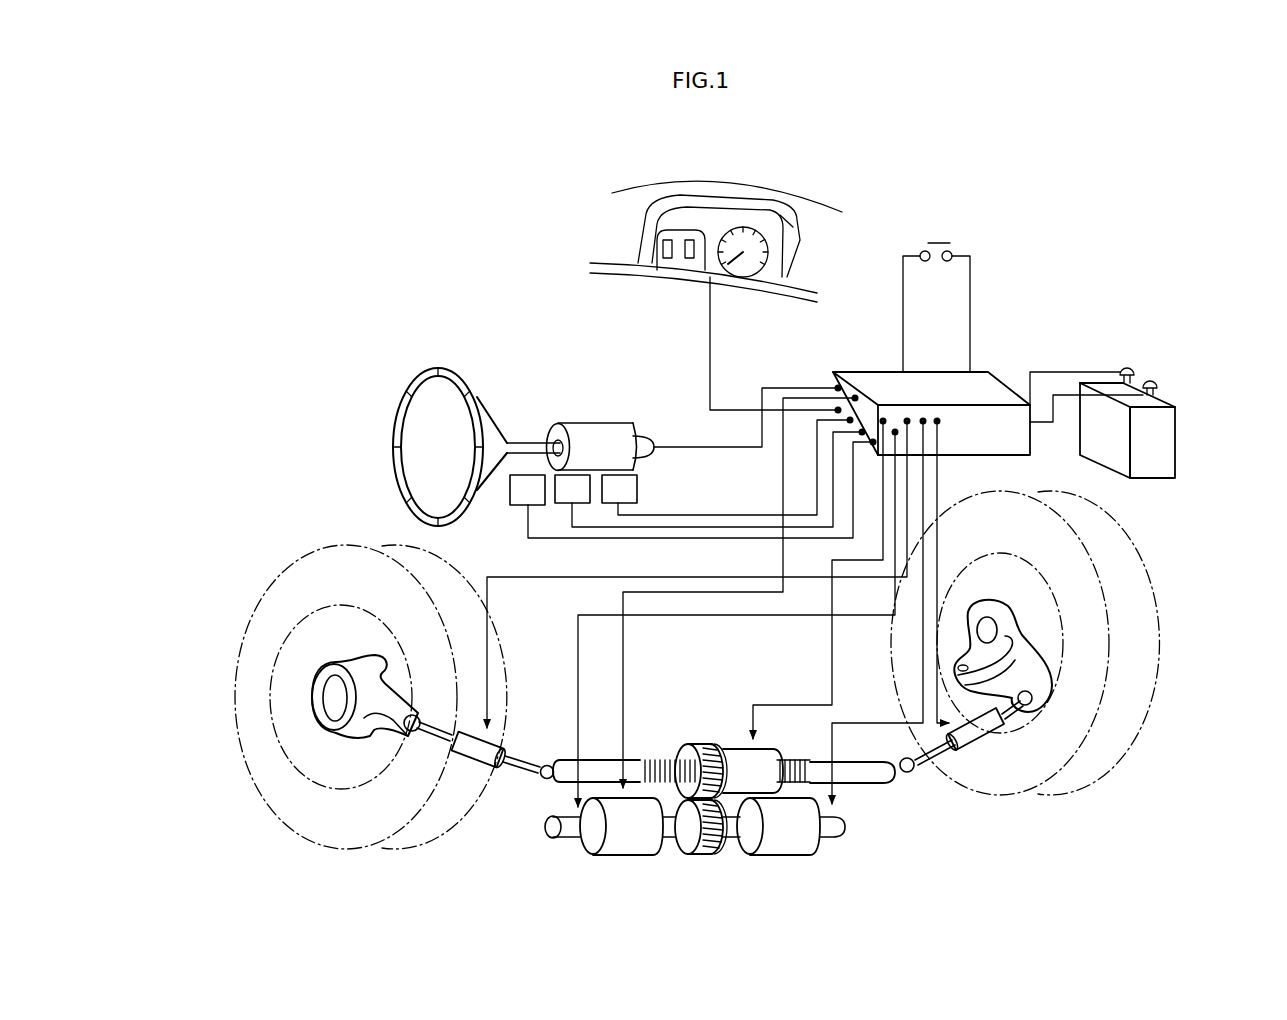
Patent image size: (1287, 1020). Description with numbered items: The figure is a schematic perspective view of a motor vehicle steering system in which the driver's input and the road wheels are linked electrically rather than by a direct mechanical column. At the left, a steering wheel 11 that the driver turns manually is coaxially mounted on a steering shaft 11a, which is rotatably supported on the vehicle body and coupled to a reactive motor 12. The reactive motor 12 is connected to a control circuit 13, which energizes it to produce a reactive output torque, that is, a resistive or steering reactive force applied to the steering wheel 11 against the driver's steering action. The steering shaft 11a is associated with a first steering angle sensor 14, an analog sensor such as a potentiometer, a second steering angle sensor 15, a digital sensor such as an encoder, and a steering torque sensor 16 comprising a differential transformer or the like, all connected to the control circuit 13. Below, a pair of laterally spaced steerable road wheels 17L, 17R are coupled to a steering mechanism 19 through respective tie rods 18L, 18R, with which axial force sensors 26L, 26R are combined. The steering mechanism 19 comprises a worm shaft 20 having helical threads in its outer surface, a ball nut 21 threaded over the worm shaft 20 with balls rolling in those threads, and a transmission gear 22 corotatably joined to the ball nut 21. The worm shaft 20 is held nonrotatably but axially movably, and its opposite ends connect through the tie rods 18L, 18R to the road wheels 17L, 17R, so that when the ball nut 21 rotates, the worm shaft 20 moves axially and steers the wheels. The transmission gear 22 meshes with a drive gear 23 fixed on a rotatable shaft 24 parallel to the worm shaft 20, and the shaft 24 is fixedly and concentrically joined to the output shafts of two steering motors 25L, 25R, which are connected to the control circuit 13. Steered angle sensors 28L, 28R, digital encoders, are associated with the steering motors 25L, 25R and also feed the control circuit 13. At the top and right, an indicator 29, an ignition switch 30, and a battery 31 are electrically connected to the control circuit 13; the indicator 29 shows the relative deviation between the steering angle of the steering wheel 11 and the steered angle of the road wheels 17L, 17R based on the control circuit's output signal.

The steering wheel 11 is at (398, 417).
The steering shaft 11a is at (543, 440).
The reactive motor 12 is at (641, 450).
The control circuit 13 is at (968, 388).
The first steering angle sensor 14 is at (523, 490).
The second steering angle sensor 15 is at (565, 506).
The steering torque sensor 16 is at (623, 485).
The steerable road wheel 17L is at (305, 808).
The steerable road wheel 17R is at (1122, 620).
The tie rod 18L is at (510, 777).
The tie rod 18R is at (921, 752).
The steering mechanism 19 is at (756, 870).
The worm shaft 20 is at (802, 760).
The ball nut 21 is at (735, 757).
The transmission gear 22 is at (710, 745).
The drive gear 23 is at (712, 840).
The rotatable shaft 24 is at (668, 840).
The steering motor 25L is at (630, 838).
The steering motor 25R is at (792, 838).
The axial force sensor 26L is at (470, 748).
The axial force sensor 26R is at (993, 730).
The steered angle sensor 28L is at (556, 838).
The steered angle sensor 28R is at (840, 838).
The indicator 29 is at (703, 230).
The ignition switch 30 is at (942, 237).
The battery 31 is at (1160, 450).